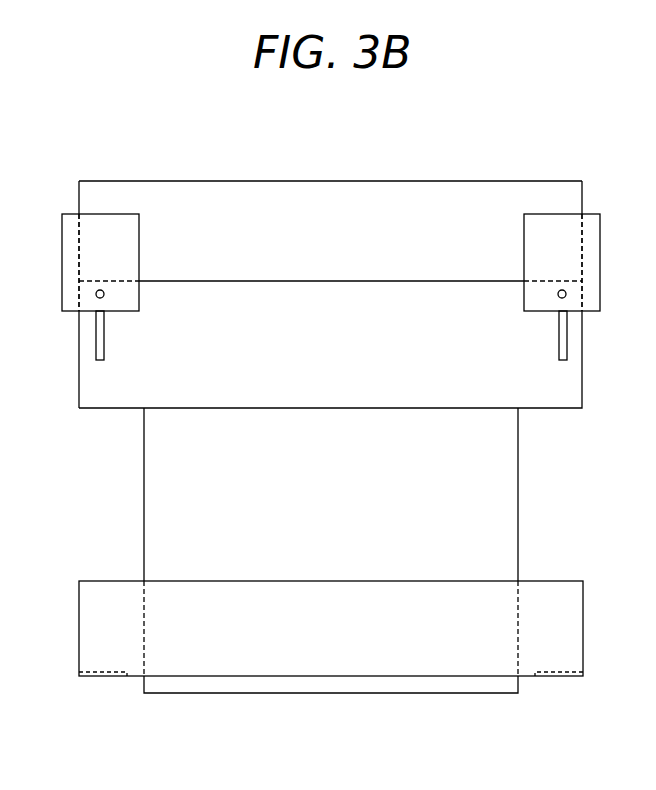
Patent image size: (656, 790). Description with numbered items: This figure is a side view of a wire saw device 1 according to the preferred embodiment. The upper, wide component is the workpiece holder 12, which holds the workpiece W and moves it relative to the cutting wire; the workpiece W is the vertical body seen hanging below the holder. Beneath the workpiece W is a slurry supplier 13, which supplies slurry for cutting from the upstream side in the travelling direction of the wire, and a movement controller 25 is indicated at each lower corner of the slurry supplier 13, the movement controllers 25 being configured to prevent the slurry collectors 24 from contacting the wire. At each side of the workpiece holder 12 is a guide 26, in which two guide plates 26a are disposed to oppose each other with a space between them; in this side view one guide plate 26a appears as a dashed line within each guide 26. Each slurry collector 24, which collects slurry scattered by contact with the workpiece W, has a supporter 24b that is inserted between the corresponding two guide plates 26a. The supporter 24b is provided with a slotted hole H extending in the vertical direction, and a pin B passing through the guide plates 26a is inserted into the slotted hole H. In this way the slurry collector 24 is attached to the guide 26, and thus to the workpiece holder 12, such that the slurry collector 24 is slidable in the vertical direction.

The wire saw device 1 is at (502, 160).
The workpiece holder 12 is at (391, 181).
The slurry supplier 13 is at (108, 592).
The slurry collector 24 is at (70, 392).
The supporter 24b is at (87, 375).
The movement controller 25 is at (101, 678).
The guide 26 is at (57, 257).
The guide plate 26a is at (104, 214).
The pin B is at (93, 294).
The slotted hole H is at (100, 338).
The workpiece W is at (158, 493).